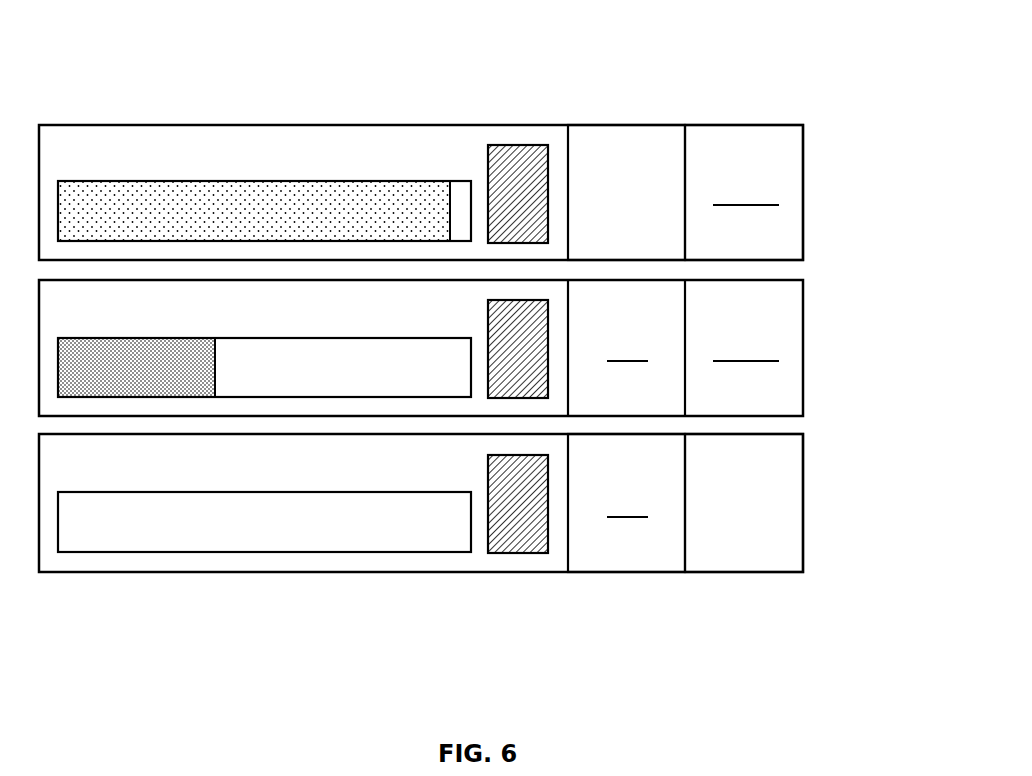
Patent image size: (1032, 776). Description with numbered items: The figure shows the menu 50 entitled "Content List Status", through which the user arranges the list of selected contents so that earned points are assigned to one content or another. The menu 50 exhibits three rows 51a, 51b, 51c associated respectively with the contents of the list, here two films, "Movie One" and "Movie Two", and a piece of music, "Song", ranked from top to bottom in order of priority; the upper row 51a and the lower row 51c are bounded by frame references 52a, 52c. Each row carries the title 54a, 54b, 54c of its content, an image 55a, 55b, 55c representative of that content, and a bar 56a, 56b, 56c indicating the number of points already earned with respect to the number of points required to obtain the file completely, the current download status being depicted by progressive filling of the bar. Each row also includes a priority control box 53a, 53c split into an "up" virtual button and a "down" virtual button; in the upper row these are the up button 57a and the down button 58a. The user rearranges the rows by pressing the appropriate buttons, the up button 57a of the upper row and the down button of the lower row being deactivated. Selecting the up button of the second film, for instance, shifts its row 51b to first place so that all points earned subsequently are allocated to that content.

The menu 50 is at (808, 98).
The row 51a is at (808, 162).
The row 51b is at (808, 357).
The row 51c is at (808, 487).
The row element 52a is at (289, 125).
The row element 52c is at (283, 572).
The priority control box 53a is at (798, 118).
The priority control box 53c is at (793, 580).
The title 54a is at (152, 138).
The title 54b is at (160, 305).
The title 54c is at (136, 465).
The image 55a is at (507, 145).
The image 55b is at (487, 322).
The image 55c is at (487, 475).
The bar 56a is at (352, 185).
The bar 56b is at (320, 338).
The bar 56c is at (320, 492).
The up virtual button 57a is at (670, 242).
The down virtual button 58a is at (785, 216).